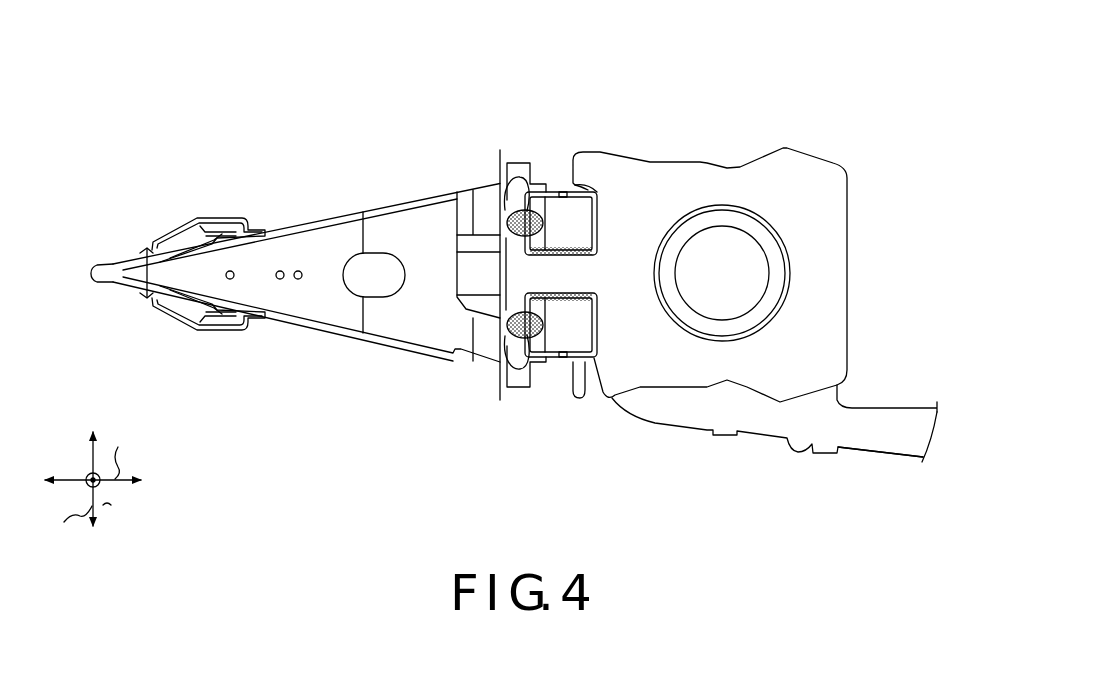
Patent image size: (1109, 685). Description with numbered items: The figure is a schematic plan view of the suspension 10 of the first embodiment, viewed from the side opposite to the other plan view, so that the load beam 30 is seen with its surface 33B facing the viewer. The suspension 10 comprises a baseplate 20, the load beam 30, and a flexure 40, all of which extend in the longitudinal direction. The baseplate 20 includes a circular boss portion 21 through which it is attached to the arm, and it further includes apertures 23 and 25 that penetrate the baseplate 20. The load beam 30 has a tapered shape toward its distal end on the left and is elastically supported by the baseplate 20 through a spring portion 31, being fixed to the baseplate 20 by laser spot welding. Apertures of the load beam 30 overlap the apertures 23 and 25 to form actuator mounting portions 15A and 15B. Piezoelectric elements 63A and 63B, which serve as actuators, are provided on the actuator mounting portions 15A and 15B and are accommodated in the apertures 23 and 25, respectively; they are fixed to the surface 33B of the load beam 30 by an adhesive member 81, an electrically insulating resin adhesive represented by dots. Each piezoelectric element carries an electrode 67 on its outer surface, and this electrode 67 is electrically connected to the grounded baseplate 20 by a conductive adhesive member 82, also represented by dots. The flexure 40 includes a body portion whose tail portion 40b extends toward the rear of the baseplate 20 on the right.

The suspension 10 is at (862, 117).
The actuator mounting portion 15A is at (544, 120).
The actuator mounting portion 15B is at (552, 408).
The baseplate 20 is at (848, 296).
The boss portion 21 is at (775, 256).
The aperture 23 is at (598, 192).
The aperture 25 is at (592, 358).
The load beam 30 is at (323, 333).
The spring portion 31 is at (485, 207).
The surface 33B is at (325, 246).
The flexure 40 is at (492, 333).
The tail portion 40b is at (896, 467).
The piezoelectric element 63A is at (564, 250).
The piezoelectric element 63B is at (563, 300).
The electrode 67 is at (576, 195).
The adhesive member 81 is at (556, 247).
The adhesive member 82 is at (511, 178).